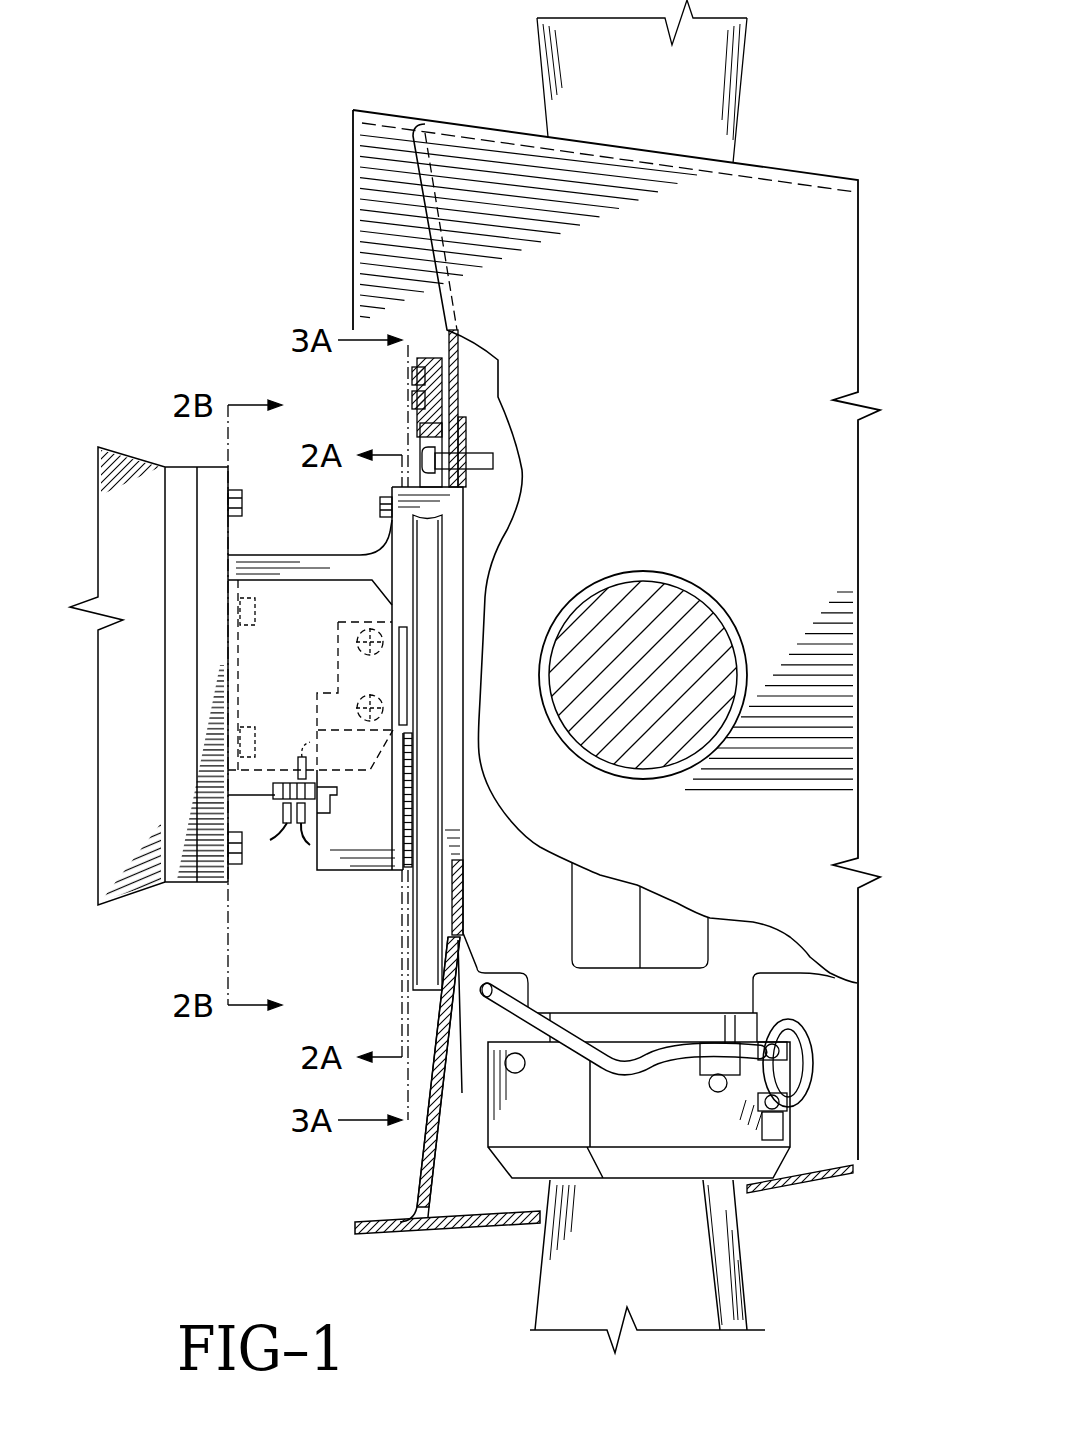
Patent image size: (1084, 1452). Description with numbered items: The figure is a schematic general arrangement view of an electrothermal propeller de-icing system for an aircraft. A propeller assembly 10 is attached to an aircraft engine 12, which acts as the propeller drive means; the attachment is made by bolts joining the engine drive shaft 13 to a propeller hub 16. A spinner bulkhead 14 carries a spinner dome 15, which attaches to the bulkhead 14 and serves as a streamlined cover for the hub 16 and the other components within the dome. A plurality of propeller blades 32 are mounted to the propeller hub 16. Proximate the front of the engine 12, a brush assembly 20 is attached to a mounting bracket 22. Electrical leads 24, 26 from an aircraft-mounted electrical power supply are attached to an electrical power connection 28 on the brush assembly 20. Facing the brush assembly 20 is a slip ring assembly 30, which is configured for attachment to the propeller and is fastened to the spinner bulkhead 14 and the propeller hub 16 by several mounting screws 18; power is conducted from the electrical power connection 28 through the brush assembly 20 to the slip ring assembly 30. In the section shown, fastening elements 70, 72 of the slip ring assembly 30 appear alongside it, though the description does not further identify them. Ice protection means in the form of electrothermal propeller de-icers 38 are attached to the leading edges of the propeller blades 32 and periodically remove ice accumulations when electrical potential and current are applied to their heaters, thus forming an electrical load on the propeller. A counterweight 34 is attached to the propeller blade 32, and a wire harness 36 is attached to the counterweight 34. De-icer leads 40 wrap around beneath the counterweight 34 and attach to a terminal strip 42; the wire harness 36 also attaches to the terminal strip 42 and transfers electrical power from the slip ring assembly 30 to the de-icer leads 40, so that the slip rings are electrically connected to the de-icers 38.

The propeller assembly 10 is at (792, 155).
The aircraft engine 12 is at (108, 444).
The engine drive shaft 13 is at (316, 556).
The spinner bulkhead 14 is at (425, 1170).
The spinner dome 15 is at (495, 1223).
The propeller hub 16 is at (465, 728).
The mounting screws 18 is at (480, 455).
The brush assembly 20 is at (388, 900).
The mounting bracket 22 is at (250, 573).
The electrical lead 24 is at (283, 825).
The electrical lead 26 is at (296, 825).
The electrical power connection 28 is at (300, 848).
The slip ring assembly 30 is at (416, 345).
The propeller blades 32 is at (700, 585).
The counterweight 34 is at (833, 1133).
The wire harness 36 is at (560, 1048).
The electrothermal propeller de-icers 38 is at (735, 1292).
The de-icer leads 40 is at (785, 1020).
The terminal strip 42 is at (760, 1142).
The nut 70 is at (422, 400).
The washer 72 is at (422, 374).